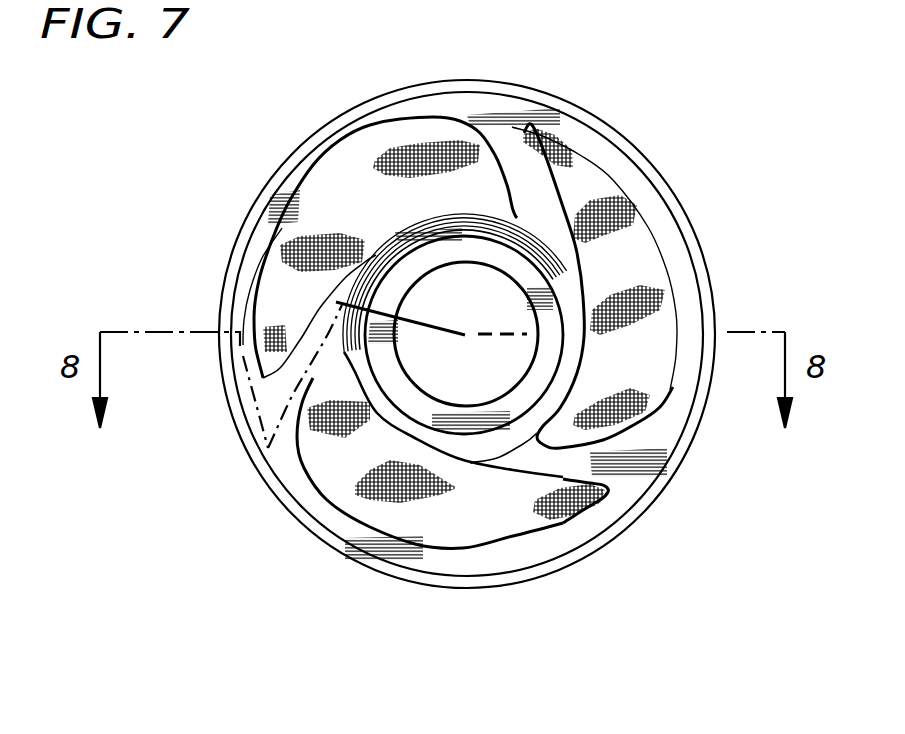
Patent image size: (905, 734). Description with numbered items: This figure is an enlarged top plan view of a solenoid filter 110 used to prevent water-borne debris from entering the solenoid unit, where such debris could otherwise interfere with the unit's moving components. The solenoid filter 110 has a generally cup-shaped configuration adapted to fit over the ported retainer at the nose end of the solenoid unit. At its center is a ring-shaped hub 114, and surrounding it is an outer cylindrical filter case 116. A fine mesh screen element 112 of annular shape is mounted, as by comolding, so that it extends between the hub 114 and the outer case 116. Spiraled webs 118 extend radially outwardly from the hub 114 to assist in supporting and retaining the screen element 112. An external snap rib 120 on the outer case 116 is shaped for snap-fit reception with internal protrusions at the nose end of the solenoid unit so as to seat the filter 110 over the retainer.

The solenoid filter 110 is at (697, 157).
The fine mesh screen element 112 is at (330, 207).
The ring-shaped hub 114 is at (540, 365).
The outer cylindrical filter case 116 is at (623, 493).
The spiraled webs 118 is at (545, 190).
The external snap rib 120 is at (335, 547).